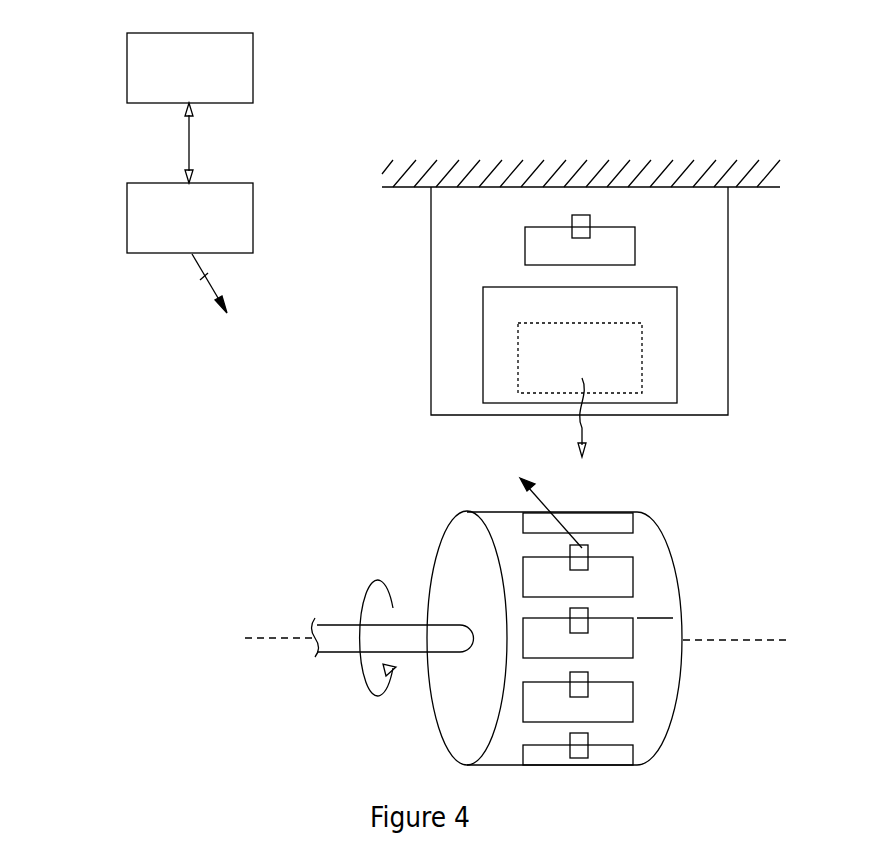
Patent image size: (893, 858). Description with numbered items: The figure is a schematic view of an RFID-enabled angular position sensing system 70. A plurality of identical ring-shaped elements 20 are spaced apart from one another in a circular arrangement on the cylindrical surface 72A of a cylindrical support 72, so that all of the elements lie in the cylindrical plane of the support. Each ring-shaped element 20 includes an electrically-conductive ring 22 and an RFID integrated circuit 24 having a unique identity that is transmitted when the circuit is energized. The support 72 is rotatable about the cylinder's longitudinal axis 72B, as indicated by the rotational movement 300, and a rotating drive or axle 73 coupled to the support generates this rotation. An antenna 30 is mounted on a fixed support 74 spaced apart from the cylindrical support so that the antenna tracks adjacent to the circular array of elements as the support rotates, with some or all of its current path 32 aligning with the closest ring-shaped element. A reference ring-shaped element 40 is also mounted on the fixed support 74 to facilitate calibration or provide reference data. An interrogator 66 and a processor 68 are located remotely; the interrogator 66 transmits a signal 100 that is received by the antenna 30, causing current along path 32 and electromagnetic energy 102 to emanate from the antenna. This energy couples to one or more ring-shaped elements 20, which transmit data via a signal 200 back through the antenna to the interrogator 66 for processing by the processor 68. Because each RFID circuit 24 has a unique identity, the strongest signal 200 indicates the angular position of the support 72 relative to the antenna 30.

The processor 68 is at (127, 52).
The interrogator 66 is at (127, 207).
The signal 100 is at (197, 273).
The angular position sensing system 70 is at (607, 115).
The fixed support 74 is at (728, 308).
The reference ring-shaped element 40 is at (510, 244).
The antenna 30 is at (483, 315).
The current path 32 is at (518, 357).
The electromagnetic energy 102 is at (577, 420).
The cylindrical support 72 is at (503, 766).
The rotating drive or axle 73 is at (335, 642).
The rotational movement 300 is at (370, 588).
The ring-shaped elements 20 is at (520, 552).
The electrically-conductive ring 22 is at (633, 567).
The RFID integrated circuit 24 is at (588, 550).
The signal 200 is at (549, 496).
The cylindrical surface 72A is at (657, 607).
The longitudinal axis 72B is at (750, 640).